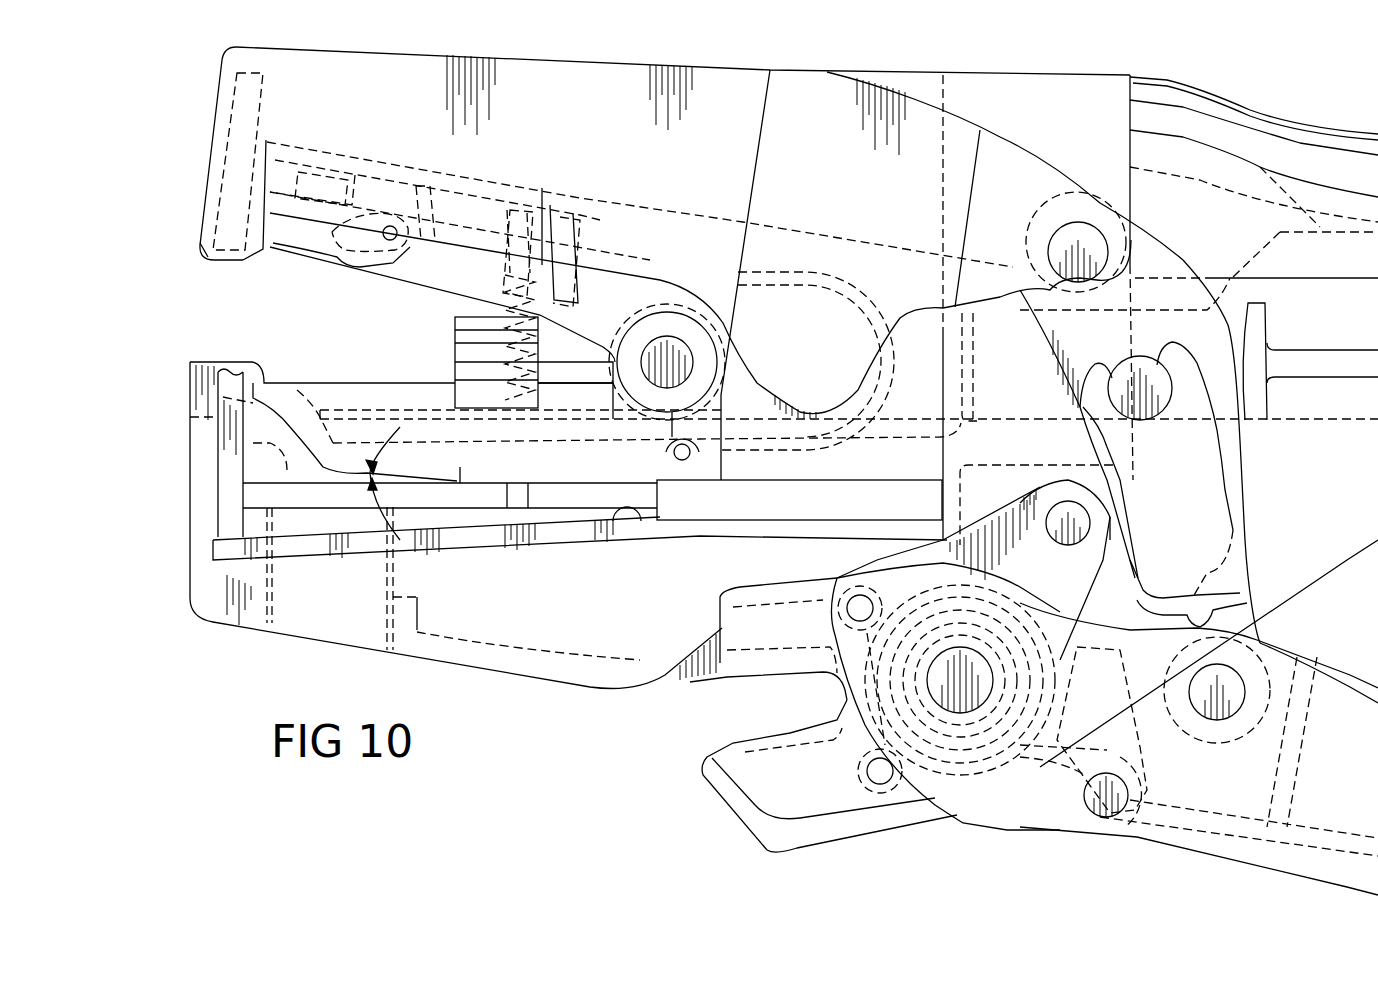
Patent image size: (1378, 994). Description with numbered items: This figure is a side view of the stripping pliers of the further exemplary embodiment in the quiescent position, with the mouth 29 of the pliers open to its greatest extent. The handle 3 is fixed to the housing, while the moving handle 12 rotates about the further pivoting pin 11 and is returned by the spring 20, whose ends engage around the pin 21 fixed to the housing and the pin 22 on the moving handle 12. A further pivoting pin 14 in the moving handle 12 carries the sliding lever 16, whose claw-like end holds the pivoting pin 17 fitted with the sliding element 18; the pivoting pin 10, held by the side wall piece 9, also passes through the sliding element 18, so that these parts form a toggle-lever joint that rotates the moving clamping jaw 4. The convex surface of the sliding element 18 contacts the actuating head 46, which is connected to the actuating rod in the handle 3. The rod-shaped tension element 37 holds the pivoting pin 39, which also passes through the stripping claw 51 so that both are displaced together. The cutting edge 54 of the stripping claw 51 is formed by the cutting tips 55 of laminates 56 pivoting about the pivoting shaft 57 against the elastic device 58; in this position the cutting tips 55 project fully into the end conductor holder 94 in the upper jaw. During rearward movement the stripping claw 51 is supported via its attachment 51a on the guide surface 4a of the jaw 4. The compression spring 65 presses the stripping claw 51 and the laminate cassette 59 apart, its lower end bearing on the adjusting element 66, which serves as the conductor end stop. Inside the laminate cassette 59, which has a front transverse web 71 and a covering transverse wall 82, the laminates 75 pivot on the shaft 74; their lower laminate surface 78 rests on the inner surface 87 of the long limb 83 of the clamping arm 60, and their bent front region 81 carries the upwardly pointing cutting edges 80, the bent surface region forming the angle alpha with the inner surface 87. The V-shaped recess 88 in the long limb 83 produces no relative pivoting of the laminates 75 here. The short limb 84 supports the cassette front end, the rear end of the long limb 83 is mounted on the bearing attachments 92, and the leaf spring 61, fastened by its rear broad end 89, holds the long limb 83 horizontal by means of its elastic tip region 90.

The handle 3 is at (1338, 135).
The moving clamping jaw 4 is at (620, 97).
The guide surface 4a is at (643, 203).
The side wall piece 9 is at (1070, 190).
The pivoting pin 10 is at (1083, 230).
The further pivoting pin 11 is at (975, 693).
The moving handle 12 is at (1310, 842).
The further pivoting pin 14 is at (1217, 673).
The sliding lever 16 is at (1247, 550).
The pivoting pin 17 is at (1160, 390).
The sliding element 18 is at (1153, 245).
The spring 20 is at (1053, 815).
The pin 21 is at (1080, 523).
The pin 22 is at (1100, 812).
The mouth of the pliers 29 is at (228, 305).
The tension element 37 is at (768, 310).
The pivoting pin 39 is at (672, 343).
The actuating head 46 is at (1262, 333).
The stripping claw 51 is at (473, 197).
The attachment 51a is at (290, 140).
The cutting edge 54 is at (270, 260).
The cutting tips 55 is at (270, 247).
The laminates 56 is at (355, 225).
The pivoting shaft 57 is at (398, 226).
The elastic device 58 is at (313, 172).
The laminate cassette 59 is at (345, 160).
The clamping arm 60 is at (507, 510).
The leaf spring 61 is at (700, 530).
The compression spring 65 is at (543, 217).
The adjusting element 66 is at (463, 337).
The transverse web 71 is at (243, 455).
The shaft 74 is at (684, 462).
The laminates 75 is at (453, 530).
The lower laminate surface 78 is at (577, 507).
The cutting edges 80 is at (263, 372).
The front region 81 is at (297, 405).
The transverse wall 82 is at (353, 403).
The long limb 83 is at (263, 497).
The short limb 84 is at (227, 487).
The inner surface 87 is at (303, 483).
The V-shaped recess 88 is at (547, 515).
The rear broad end 89 is at (790, 530).
The elastic tip region 90 is at (353, 567).
The bearing attachments 92 is at (623, 513).
The end conductor holder 94 is at (200, 243).
The angle alpha is at (384, 483).